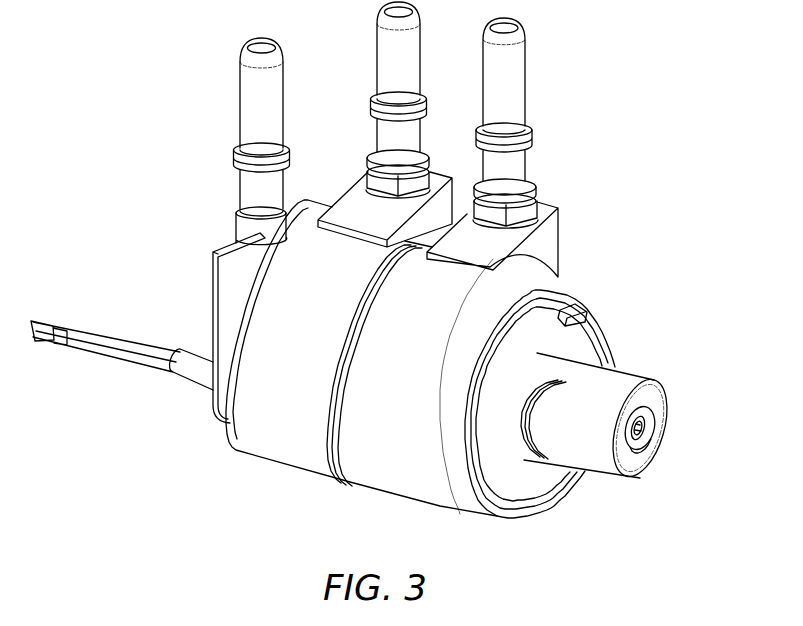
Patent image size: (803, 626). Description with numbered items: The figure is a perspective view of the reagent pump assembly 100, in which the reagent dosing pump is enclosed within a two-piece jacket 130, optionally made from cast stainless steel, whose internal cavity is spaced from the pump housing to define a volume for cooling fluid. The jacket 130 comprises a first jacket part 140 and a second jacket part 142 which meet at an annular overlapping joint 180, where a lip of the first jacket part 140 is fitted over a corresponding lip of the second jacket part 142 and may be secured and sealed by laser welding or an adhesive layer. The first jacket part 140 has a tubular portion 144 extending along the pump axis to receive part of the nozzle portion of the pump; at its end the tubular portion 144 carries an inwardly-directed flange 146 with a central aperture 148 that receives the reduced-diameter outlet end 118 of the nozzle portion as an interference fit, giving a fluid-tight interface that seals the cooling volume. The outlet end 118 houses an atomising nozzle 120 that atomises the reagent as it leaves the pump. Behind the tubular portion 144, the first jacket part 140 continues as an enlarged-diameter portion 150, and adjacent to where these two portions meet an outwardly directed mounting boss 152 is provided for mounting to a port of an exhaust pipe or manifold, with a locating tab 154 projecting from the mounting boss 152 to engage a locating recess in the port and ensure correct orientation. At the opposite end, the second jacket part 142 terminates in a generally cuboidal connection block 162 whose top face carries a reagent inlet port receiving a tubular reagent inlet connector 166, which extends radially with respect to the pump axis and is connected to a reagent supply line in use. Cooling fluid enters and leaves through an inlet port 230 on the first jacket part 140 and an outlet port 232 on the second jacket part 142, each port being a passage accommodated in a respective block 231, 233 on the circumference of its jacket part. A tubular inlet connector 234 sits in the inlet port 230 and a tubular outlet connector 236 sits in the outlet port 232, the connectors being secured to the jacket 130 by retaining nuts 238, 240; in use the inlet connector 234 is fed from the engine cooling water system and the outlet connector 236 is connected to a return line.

The pump assembly 100 is at (135, 97).
The outlet end 118 is at (641, 452).
The atomising nozzle 120 is at (643, 427).
The jacket 130 is at (571, 278).
The first jacket part 140 is at (393, 477).
The second jacket part 142 is at (285, 445).
The tubular portion 144 is at (600, 470).
The flange 146 is at (652, 392).
The central aperture 148 is at (650, 405).
The enlarged-diameter portion 150 is at (424, 493).
The mounting boss 152 is at (545, 483).
The locating tab 154 is at (588, 311).
The connection block 162 is at (208, 268).
The reagent inlet connector 166 is at (247, 99).
The annular overlapping joint 180 is at (353, 485).
The inlet port 230 is at (363, 180).
The block 231 is at (441, 190).
The outlet port 232 is at (543, 203).
The block 233 is at (552, 224).
The inlet connector 234 is at (386, 42).
The outlet connector 236 is at (493, 70).
The retaining nut 238 is at (373, 150).
The retaining nut 240 is at (528, 178).